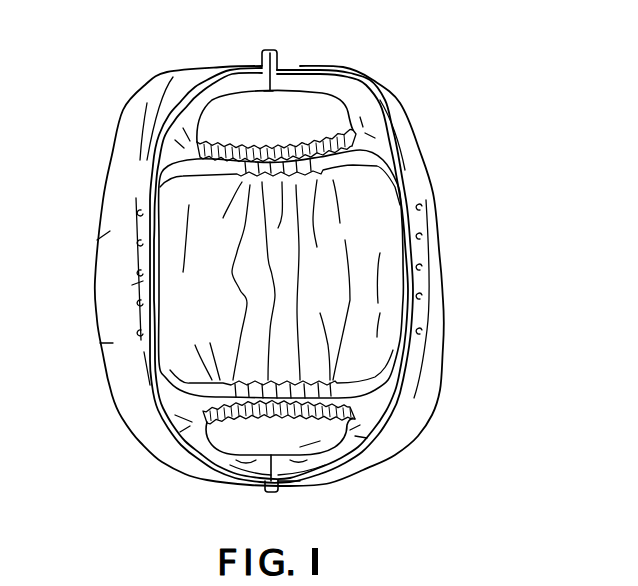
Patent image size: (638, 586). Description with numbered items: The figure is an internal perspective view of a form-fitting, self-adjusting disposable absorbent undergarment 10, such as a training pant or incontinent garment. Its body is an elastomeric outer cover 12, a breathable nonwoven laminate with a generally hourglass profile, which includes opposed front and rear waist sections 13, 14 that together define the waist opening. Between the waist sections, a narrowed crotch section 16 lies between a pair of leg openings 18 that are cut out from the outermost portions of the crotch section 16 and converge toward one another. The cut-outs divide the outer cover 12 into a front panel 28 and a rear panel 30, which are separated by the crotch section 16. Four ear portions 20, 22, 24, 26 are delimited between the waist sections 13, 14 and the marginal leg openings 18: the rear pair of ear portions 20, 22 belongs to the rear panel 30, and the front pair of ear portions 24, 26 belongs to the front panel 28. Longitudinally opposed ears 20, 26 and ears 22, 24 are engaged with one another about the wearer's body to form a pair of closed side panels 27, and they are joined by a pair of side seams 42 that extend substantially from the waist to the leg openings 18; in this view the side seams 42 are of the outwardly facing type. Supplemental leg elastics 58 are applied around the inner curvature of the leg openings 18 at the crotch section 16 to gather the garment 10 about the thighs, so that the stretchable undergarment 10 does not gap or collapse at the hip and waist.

The disposable absorbent undergarment 10 is at (498, 99).
The elastomeric outer cover 12 is at (126, 426).
The front waist section 13 is at (400, 228).
The rear waist section 14 is at (158, 290).
The crotch section 16 is at (320, 439).
The leg openings 18 is at (207, 108).
The ear portion 20 is at (240, 78).
The ear portion 22 is at (238, 466).
The ear portion 24 is at (321, 471).
The ear portion 26 is at (300, 80).
The side panels 27 is at (289, 52).
The front panel 28 is at (433, 362).
The rear panel 30 is at (117, 151).
The side seams 42 is at (266, 50).
The supplemental leg elastics 58 is at (324, 132).